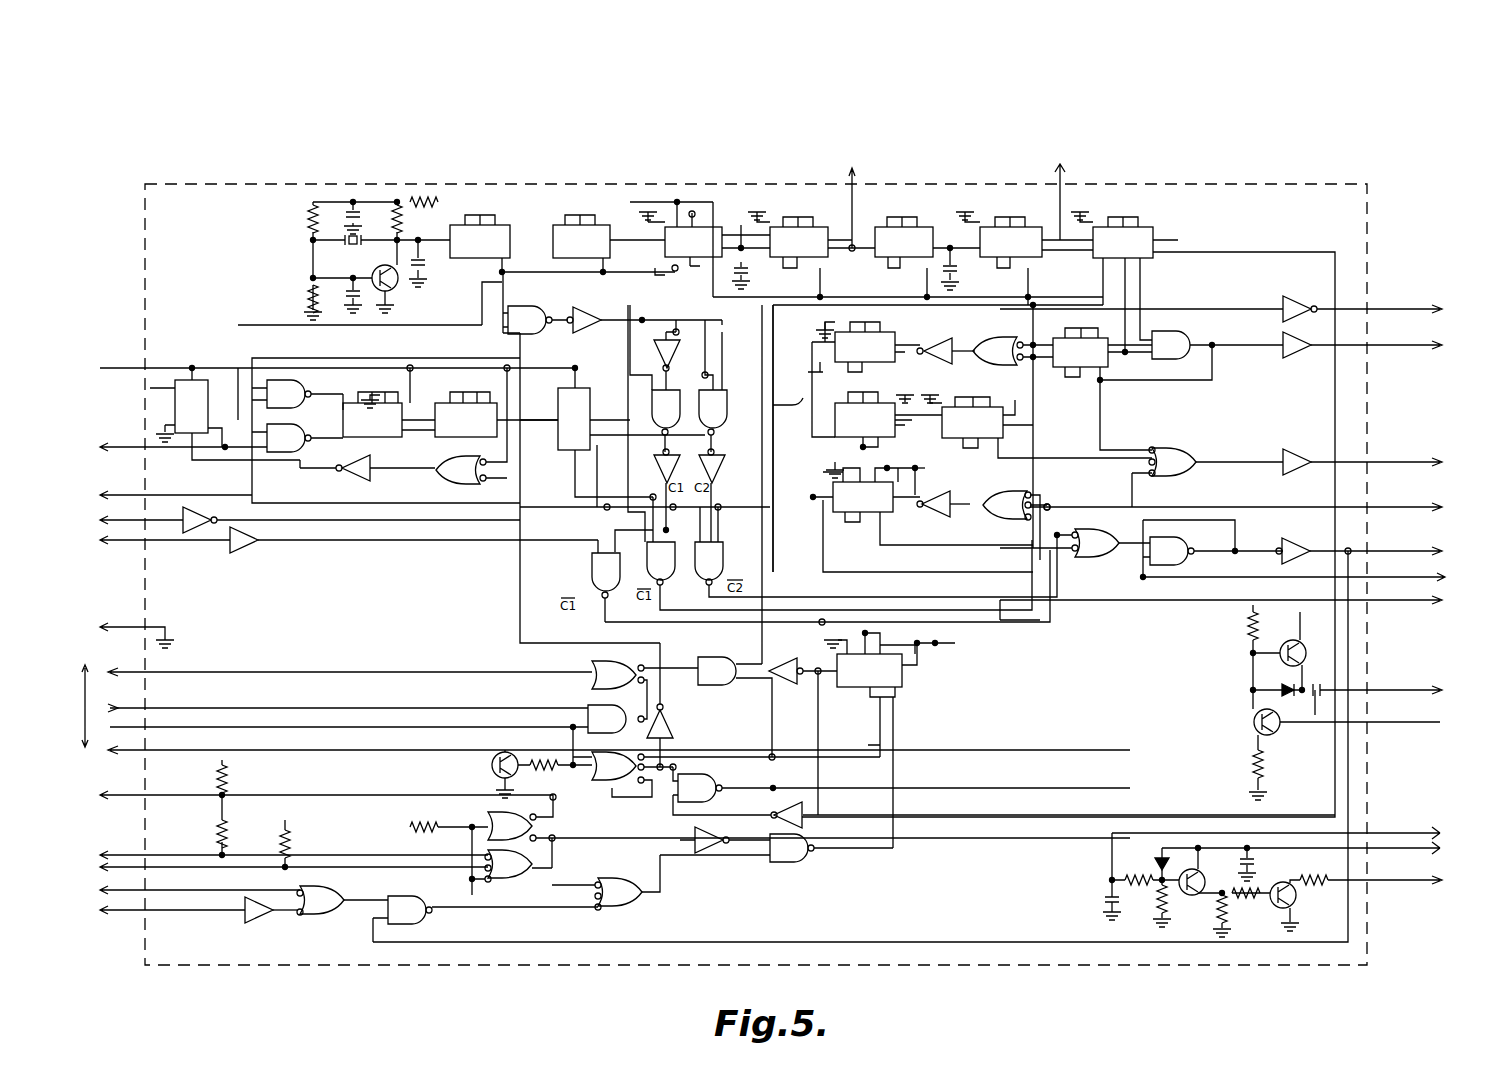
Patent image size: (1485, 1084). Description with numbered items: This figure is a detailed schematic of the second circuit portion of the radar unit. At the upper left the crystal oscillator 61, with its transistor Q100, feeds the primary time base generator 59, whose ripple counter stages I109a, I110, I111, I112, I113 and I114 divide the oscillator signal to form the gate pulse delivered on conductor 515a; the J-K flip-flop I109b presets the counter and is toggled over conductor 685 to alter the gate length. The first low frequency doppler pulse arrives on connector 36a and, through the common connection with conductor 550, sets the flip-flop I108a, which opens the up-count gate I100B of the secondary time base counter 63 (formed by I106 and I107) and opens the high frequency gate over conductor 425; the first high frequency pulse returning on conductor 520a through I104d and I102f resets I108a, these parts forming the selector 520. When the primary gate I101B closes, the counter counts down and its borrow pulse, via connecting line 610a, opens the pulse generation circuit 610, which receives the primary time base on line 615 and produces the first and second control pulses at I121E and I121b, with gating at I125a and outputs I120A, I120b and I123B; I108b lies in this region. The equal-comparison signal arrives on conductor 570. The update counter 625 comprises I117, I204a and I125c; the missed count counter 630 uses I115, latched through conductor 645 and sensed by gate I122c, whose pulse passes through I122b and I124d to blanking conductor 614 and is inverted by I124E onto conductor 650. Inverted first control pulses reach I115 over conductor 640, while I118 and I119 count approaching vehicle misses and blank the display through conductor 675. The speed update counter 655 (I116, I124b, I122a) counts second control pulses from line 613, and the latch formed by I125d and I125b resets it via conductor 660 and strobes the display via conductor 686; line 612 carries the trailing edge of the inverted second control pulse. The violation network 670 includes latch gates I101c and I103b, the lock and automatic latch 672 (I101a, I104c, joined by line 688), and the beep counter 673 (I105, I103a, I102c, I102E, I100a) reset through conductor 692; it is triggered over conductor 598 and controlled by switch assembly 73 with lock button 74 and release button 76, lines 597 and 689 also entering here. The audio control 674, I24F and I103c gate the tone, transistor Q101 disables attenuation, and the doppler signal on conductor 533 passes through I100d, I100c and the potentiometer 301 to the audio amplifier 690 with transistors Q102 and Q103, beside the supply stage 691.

The primary time base generator 59 is at (294, 269).
The crystal oscillator 61 is at (352, 246).
The oscillator transistor Q100 is at (396, 288).
The ripple counter stage I109a is at (492, 262).
The J-K flip-flop interval selector I109b is at (602, 233).
The ripple counter stage I110 is at (700, 249).
The ripple counter stage I111 is at (820, 225).
The ripple counter stage I112 is at (927, 257).
The ripple counter stage I113 is at (1024, 258).
The primary time base counter stage I114 is at (1068, 514).
The conductor 425 is at (1066, 167).
The connector/conductor 36a is at (125, 355).
The conductor 550 is at (215, 352).
The J-K flip-flop I108a is at (172, 408).
The first high frequency doppler pulse selector 520 is at (150, 431).
The conductor 520a is at (153, 495).
The secondary time base counter 63 is at (410, 346).
The primary gate I101B is at (290, 385).
The up count gate I100B is at (297, 440).
The up/down counter I106 is at (389, 414).
The up/down counter I107 is at (459, 414).
The inverter I102f is at (367, 475).
The gate I104d is at (442, 461).
The gate I125a is at (555, 300).
The flip-flop IC I108b is at (612, 442).
The connecting line 610a is at (596, 480).
The pulse generation circuit 610 is at (648, 484).
The C1 pulse generator I121E is at (660, 452).
The C2 pulse generator I121b is at (730, 495).
The gate I120b is at (590, 568).
The gate I120A is at (830, 457).
The gate I123B is at (876, 566).
The input connection line 615 is at (660, 278).
The conductor 570 is at (140, 522).
The patrol car speed update counter 625 is at (806, 332).
The four-bit binary counter I117 is at (866, 358).
The count up gate I204a is at (935, 348).
The gate I125c is at (1008, 368).
The binary counter I115 is at (1095, 389).
The gate I122c is at (1198, 328).
The conductor 645 is at (1176, 385).
The patrol car speed missed count counter 630 is at (1216, 392).
The amplifier I124E is at (1318, 378).
The conductor 515a is at (1375, 309).
The conductor 650 is at (1378, 355).
The conductor 685 is at (790, 394).
The binary counter I118 is at (877, 421).
The binary counter I119 is at (977, 426).
The conductor 675 is at (1075, 458).
The gate I122b is at (1195, 440).
The amplifier I124d is at (1310, 455).
The conductor 614 is at (1408, 474).
The four-bit binary counter I116 is at (922, 503).
The speed update counter 655 is at (875, 527).
The inverter I124b is at (952, 525).
The gate I122a is at (972, 498).
The latch gate I125d is at (1112, 560).
The latch gate I125b is at (1143, 535).
The conductor 660 is at (1238, 528).
The conductor 686 is at (1381, 550).
The line 613 is at (1386, 577).
The line 612 is at (1392, 600).
The conductor 640 is at (1000, 625).
The transistor Q102 is at (1280, 660).
The audio amplifier 690 is at (1243, 686).
The transistor Q103 is at (1252, 728).
The audio potentiometer resistor 301 is at (1440, 715).
The audio control 674 is at (435, 678).
The conductor 533 is at (118, 708).
The switch assembly 73 is at (118, 725).
The gate I100c is at (592, 670).
The gate I100d is at (585, 706).
The gate I103c is at (690, 660).
The inverter I24F is at (800, 660).
The four-bit binary counter I105 is at (893, 740).
The conductor 692 is at (857, 727).
The violation latch gate I103b is at (632, 785).
The transistor Q101 is at (525, 750).
The gate I103a is at (722, 780).
The inverter I102c is at (805, 812).
The inverter I102E is at (712, 835).
The gate I100a is at (780, 862).
The beep counter 673 is at (726, 862).
The lock and automatic latch 672 is at (431, 808).
The latch gate I104c is at (809, 831).
The latch gate I101a is at (525, 878).
The line 689 is at (192, 855).
The release button 76 is at (108, 850).
The lock button 74 is at (110, 870).
The input line 597 is at (128, 912).
The conductor 598 is at (125, 890).
The signal violation network / violation latch 670 is at (358, 930).
The connection line 688 is at (520, 908).
The violation latch gate I101c is at (640, 912).
The voltage regulator output 691 is at (1413, 888).